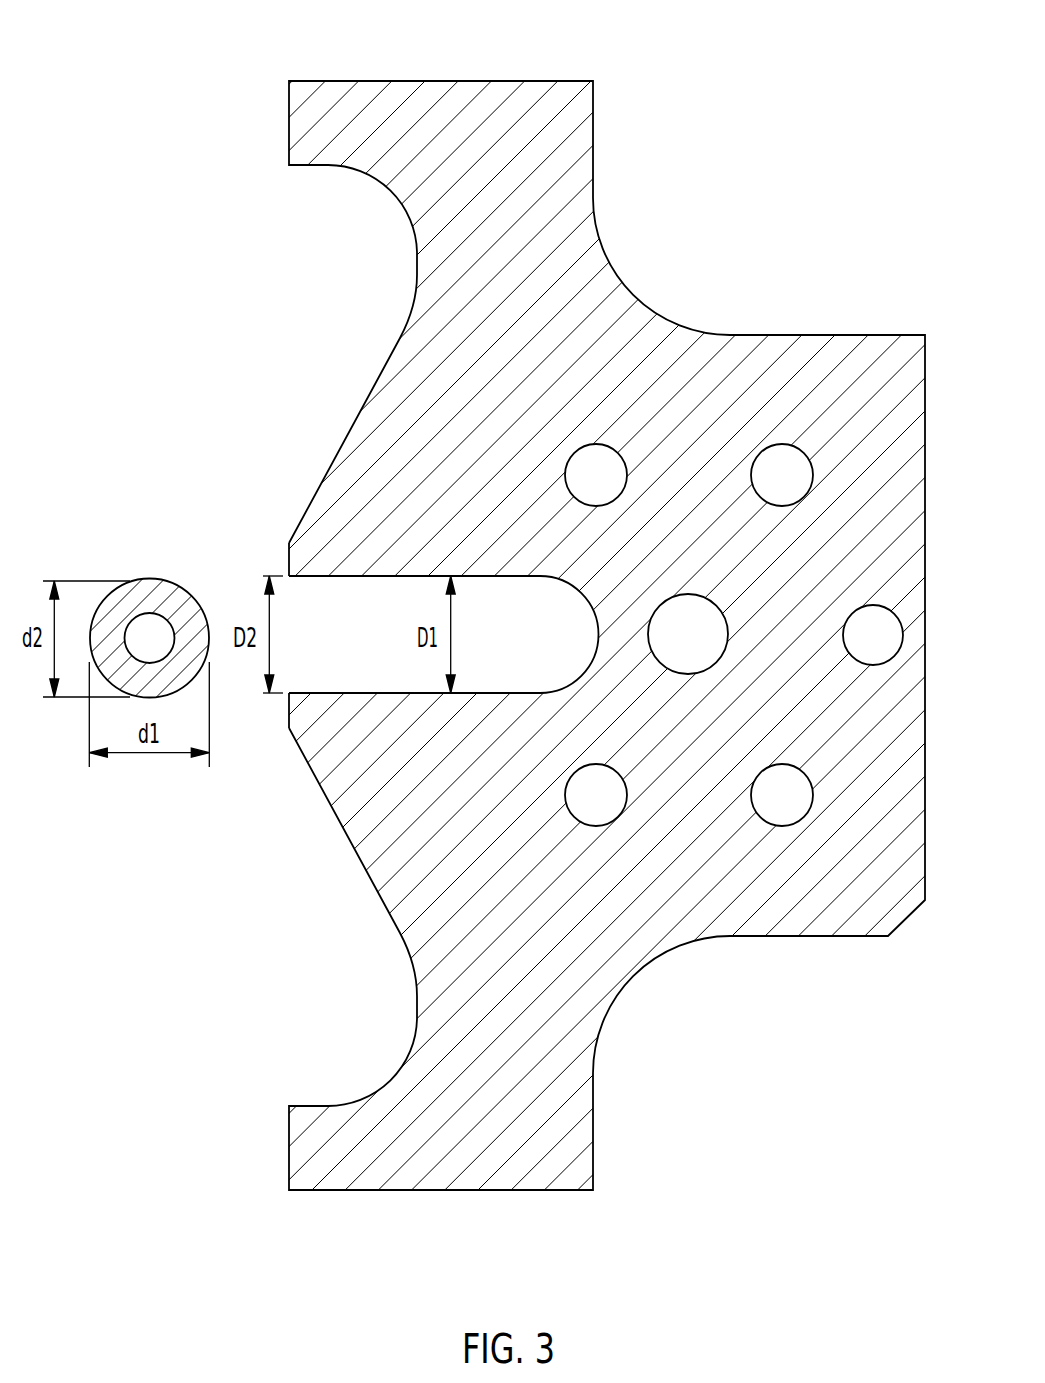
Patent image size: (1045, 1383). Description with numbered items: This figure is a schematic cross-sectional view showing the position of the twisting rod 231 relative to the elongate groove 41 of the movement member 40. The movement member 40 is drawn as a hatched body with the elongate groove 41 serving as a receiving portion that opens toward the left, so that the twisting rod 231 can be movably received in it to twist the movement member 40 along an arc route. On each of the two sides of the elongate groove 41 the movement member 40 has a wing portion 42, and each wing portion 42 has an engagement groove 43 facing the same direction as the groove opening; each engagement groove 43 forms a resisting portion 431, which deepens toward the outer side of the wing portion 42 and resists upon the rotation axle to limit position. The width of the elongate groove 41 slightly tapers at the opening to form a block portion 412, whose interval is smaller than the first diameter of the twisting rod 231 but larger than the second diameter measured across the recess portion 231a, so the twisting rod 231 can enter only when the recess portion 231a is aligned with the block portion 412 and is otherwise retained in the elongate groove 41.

The movement member 40 is at (810, 343).
The elongate groove 41 is at (553, 657).
The block portion 412 is at (296, 580).
The wing portion 42 is at (435, 90).
The engagement groove 43 is at (345, 273).
The resisting portion 431 is at (360, 173).
The twisting rod 231 is at (188, 602).
The recess portion 231a is at (152, 580).